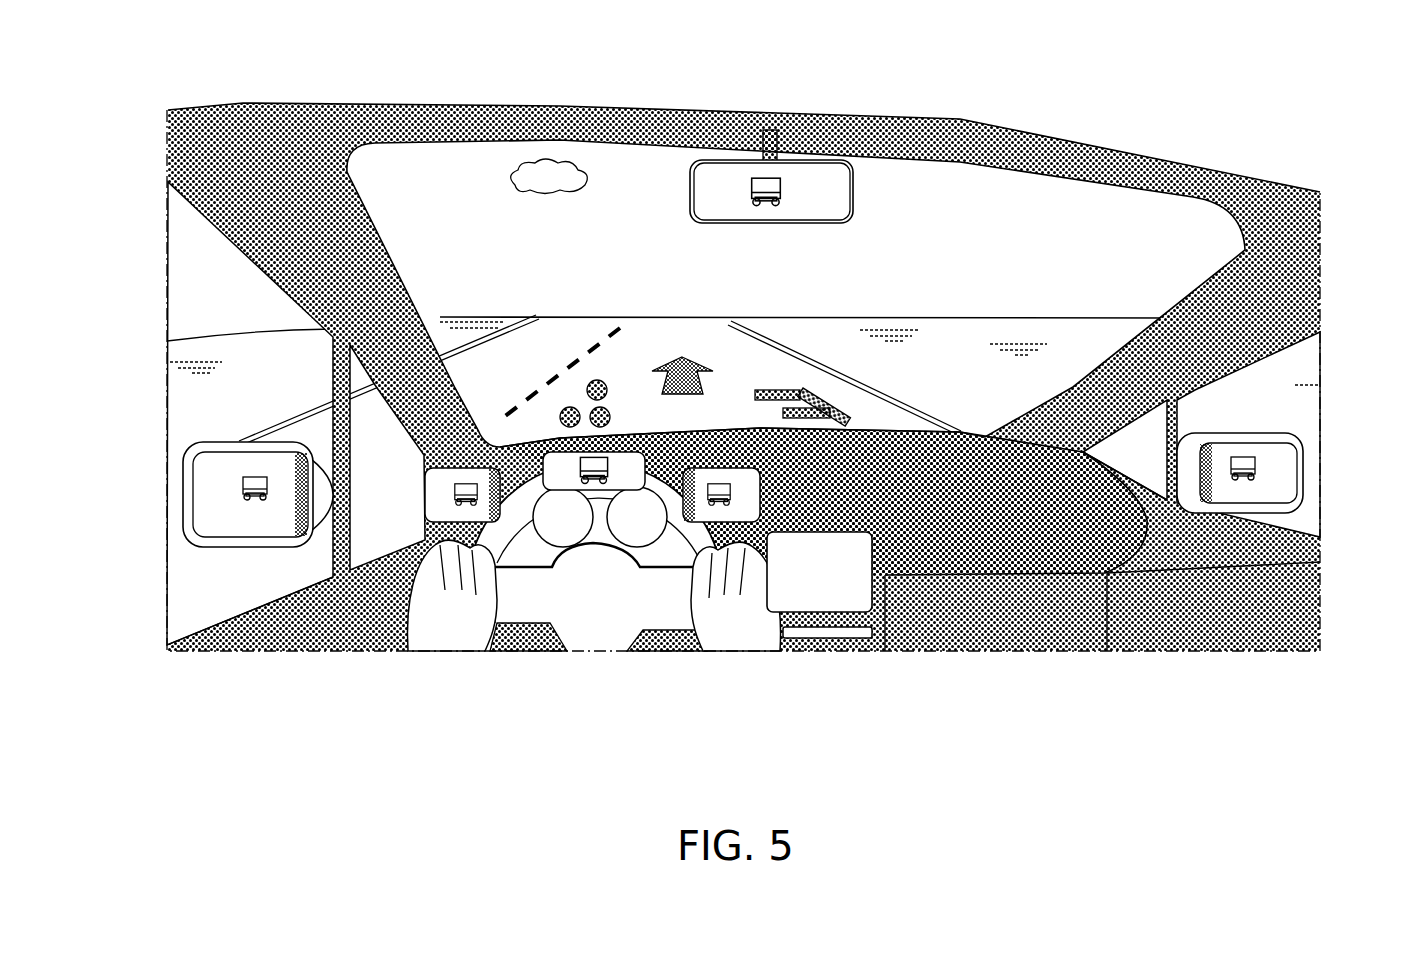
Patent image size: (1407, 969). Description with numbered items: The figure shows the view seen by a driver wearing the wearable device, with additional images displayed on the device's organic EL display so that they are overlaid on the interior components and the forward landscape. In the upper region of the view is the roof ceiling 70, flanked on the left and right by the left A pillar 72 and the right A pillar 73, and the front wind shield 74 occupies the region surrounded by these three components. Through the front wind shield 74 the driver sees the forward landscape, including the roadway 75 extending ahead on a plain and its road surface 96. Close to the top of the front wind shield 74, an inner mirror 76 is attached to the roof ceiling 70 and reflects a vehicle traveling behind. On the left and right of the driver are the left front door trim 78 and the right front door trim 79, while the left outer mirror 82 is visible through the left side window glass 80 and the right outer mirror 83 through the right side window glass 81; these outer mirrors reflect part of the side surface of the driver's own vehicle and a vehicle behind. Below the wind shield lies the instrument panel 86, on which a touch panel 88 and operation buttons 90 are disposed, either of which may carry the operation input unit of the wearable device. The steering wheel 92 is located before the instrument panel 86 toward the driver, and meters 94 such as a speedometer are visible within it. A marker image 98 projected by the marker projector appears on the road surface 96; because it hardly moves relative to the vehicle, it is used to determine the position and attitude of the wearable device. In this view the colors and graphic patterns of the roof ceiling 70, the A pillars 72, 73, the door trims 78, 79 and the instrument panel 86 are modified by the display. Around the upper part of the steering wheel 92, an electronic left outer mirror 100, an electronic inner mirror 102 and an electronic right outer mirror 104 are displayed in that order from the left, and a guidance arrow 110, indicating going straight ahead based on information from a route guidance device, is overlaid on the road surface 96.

The roof ceiling 70 is at (620, 110).
The left A pillar 72 is at (362, 185).
The right A pillar 73 is at (1237, 262).
The front wind shield 74 is at (665, 152).
The roadway 75 is at (670, 302).
The road surface 96 is at (693, 326).
The inner mirror 76 is at (850, 158).
The left front door trim 78 is at (290, 612).
The right front door trim 79 is at (1290, 566).
The left side window glass 80 is at (205, 290).
The right side window glass 81 is at (1268, 370).
The left outer mirror 82 is at (190, 514).
The right outer mirror 83 is at (1302, 466).
The instrument panel 86 is at (935, 520).
The touch panel 88 is at (845, 585).
The operation buttons 90 is at (807, 635).
The steering wheel 92 is at (510, 495).
The meters 94 is at (652, 548).
The marker image 98 is at (575, 383).
The electronic left outer mirror 100 is at (428, 518).
The electronic inner mirror 102 is at (560, 492).
The electronic right outer mirror 104 is at (760, 524).
The guidance arrow 110 is at (668, 365).